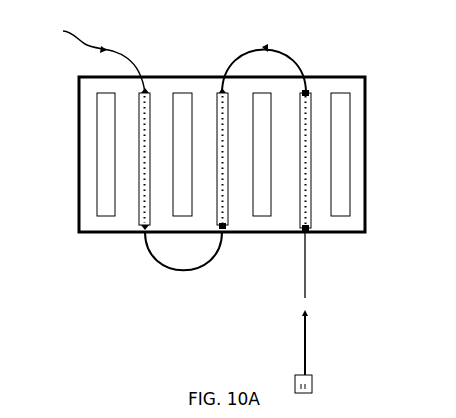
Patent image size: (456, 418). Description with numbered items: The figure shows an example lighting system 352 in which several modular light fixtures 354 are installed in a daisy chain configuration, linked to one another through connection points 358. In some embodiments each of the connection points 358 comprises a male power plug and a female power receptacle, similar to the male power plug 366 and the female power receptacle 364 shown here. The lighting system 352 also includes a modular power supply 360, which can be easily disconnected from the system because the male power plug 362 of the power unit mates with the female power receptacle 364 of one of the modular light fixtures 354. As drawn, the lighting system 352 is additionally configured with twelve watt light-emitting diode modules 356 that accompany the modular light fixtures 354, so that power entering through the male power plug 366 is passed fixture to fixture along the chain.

The lighting system 352 is at (365, 162).
The modular light fixture 354 is at (310, 95).
The 12 watt light-emitting diode module 356 is at (106, 215).
The connection point 358 is at (265, 49).
The modular power supply 360 is at (312, 383).
The male power plug 362 is at (306, 312).
The female power receptacle 364 is at (305, 297).
The male power plug 366 is at (88, 56).